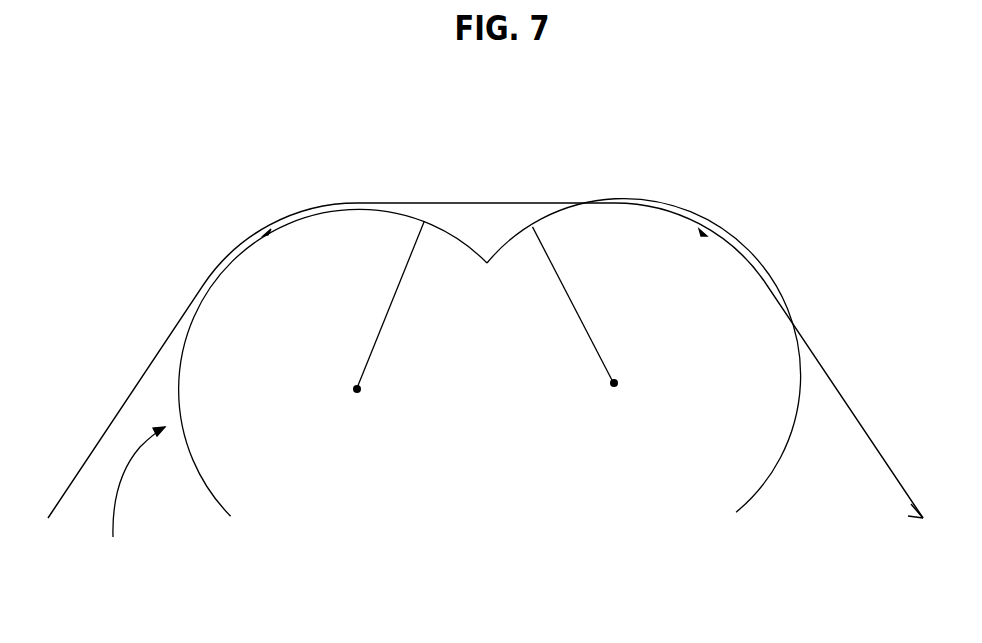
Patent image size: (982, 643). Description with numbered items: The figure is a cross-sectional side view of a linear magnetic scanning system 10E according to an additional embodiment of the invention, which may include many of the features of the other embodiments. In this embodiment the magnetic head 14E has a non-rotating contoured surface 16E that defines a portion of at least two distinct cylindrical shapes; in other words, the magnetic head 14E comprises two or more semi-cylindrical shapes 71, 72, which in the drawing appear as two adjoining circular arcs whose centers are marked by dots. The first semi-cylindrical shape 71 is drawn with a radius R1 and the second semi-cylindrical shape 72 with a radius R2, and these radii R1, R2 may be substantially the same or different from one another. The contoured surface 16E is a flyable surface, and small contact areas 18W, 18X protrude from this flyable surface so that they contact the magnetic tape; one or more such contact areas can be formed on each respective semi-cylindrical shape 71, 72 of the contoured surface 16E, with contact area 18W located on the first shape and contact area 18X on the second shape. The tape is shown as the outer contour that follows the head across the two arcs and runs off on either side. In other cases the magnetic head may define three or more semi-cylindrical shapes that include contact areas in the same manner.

The system 10E is at (485, 295).
The non-rotating contoured surface 16E is at (185, 320).
The contact area 18W is at (267, 232).
The contact area 18X is at (703, 232).
The magnetic head 14E is at (128, 497).
The semi-cylindrical shape 71 is at (180, 408).
The semi-cylindrical shape 72 is at (783, 428).
The radius R1 is at (372, 352).
The radius R2 is at (598, 352).